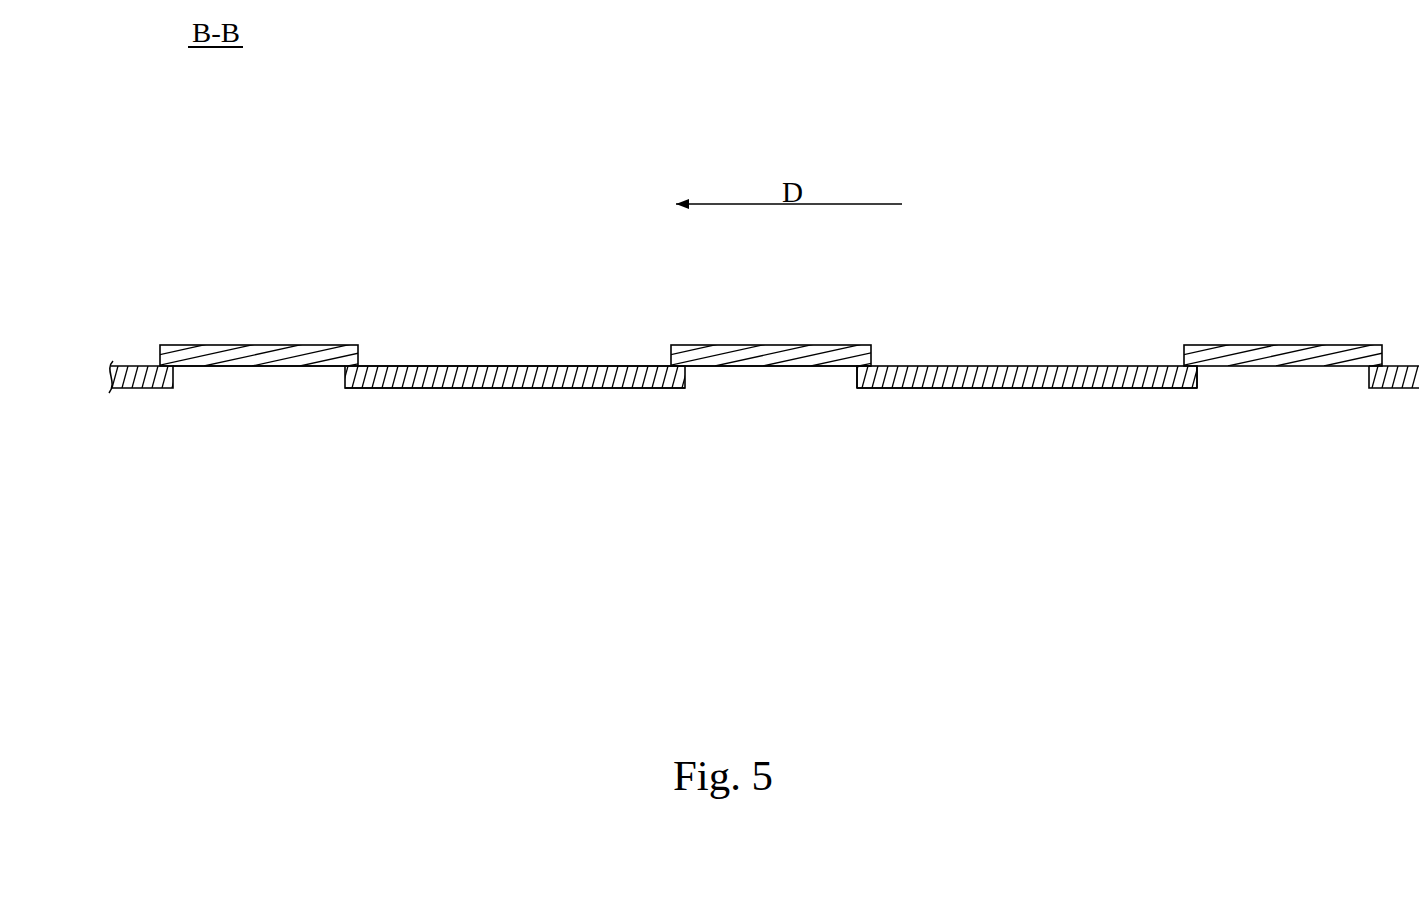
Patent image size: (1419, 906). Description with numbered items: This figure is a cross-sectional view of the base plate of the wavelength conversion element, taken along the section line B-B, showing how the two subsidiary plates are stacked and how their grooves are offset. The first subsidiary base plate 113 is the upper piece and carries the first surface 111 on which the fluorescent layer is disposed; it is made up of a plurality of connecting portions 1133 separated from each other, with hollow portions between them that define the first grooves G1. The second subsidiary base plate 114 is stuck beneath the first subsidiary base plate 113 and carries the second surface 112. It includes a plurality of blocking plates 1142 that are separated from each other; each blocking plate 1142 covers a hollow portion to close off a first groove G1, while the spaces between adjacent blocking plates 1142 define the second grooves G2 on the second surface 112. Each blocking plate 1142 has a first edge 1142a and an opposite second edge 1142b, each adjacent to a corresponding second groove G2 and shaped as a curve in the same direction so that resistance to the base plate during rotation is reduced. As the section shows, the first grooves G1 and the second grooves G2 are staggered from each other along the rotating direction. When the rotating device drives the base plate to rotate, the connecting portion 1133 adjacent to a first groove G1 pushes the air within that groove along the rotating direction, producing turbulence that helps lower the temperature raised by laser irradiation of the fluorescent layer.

The first surface 111 is at (835, 344).
The second surface 112 is at (1003, 388).
The first subsidiary base plate 113 is at (336, 320).
The connecting portion 1133 is at (765, 355).
The second subsidiary base plate 114 is at (424, 421).
The blocking plate 1142 is at (932, 388).
The first edge 1142a is at (857, 379).
The second edge 1142b is at (1197, 379).
The first groove G1 is at (514, 344).
The second groove G2 is at (252, 384).